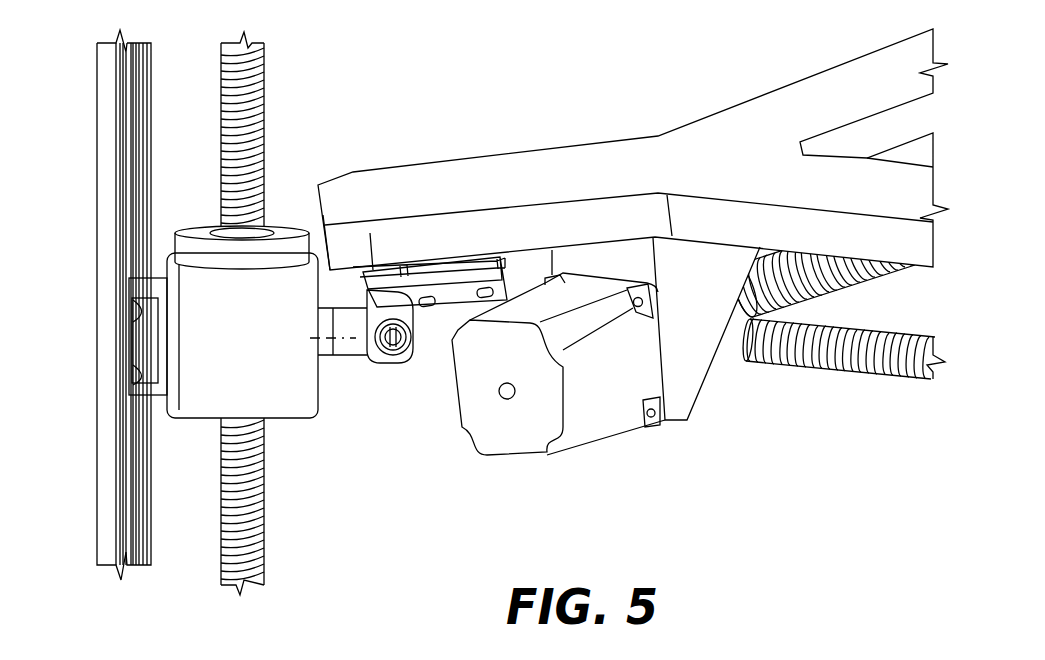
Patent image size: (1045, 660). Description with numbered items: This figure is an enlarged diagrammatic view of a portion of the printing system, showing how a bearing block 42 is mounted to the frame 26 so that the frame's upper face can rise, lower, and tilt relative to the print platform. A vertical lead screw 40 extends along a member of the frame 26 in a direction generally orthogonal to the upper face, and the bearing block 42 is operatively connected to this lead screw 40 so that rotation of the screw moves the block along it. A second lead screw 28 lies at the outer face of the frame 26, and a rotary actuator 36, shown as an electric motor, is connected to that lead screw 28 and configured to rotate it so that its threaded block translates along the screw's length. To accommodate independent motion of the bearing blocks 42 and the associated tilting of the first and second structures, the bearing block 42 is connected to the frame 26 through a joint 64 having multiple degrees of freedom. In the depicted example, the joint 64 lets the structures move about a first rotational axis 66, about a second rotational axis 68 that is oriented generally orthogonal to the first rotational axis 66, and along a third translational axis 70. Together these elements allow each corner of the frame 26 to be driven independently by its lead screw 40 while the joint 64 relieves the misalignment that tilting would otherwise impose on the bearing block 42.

The frame 26 is at (100, 228).
The lead screw 28 is at (827, 324).
The rotary actuator 36 is at (616, 398).
The lead screw 40 is at (266, 91).
The bearing block 42 is at (313, 337).
The joint 64 is at (394, 392).
The first rotational axis 66 is at (400, 352).
The second rotational axis 68 is at (316, 347).
The third translational axis 70 is at (360, 268).